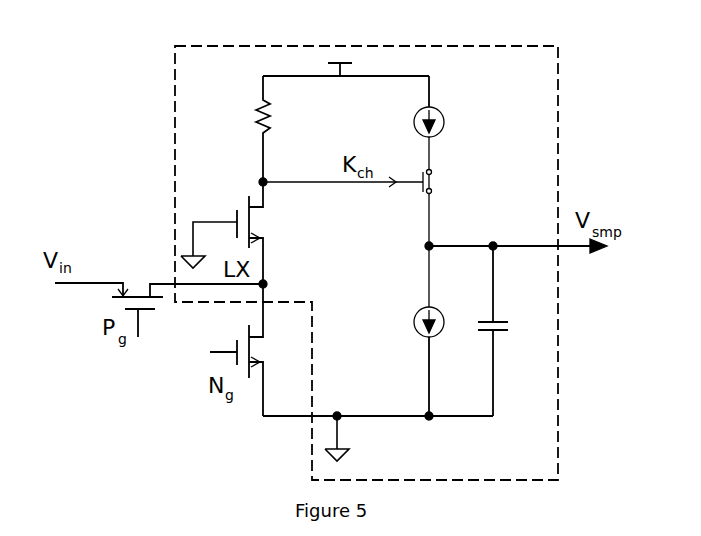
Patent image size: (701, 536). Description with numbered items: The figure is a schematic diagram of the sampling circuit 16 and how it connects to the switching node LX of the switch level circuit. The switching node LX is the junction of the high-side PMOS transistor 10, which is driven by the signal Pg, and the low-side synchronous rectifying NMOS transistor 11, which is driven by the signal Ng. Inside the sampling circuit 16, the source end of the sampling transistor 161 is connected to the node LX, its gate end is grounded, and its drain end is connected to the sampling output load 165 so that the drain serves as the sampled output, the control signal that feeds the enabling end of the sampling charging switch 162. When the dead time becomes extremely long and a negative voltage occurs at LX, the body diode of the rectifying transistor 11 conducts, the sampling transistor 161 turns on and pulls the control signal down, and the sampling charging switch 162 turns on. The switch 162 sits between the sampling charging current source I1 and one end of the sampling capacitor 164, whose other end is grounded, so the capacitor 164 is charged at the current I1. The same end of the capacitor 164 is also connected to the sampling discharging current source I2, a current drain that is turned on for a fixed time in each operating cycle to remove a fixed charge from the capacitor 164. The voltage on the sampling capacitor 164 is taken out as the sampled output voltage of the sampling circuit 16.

The sampling circuit 16 is at (432, 45).
The sampling output load 165 is at (248, 117).
The sampling transistor 161 is at (270, 231).
The synchronous rectifying NMOS transistor 11 is at (268, 351).
The high-side PMOS transistor 10 is at (127, 282).
The sampling charging switch 162 is at (433, 189).
The sampling capacitor 164 is at (504, 313).
The sampling charging current source I1 is at (405, 115).
The sampling discharging current source I2 is at (404, 304).